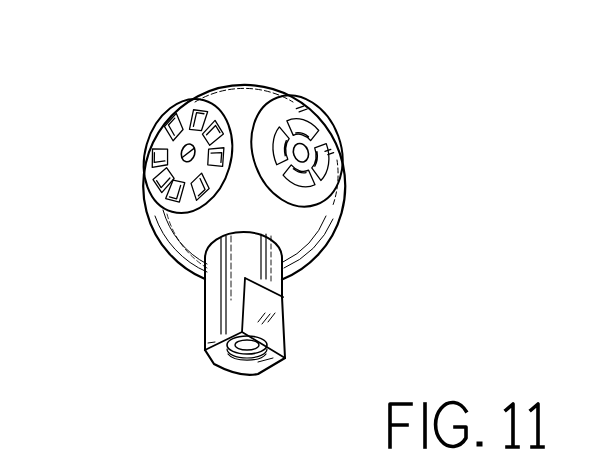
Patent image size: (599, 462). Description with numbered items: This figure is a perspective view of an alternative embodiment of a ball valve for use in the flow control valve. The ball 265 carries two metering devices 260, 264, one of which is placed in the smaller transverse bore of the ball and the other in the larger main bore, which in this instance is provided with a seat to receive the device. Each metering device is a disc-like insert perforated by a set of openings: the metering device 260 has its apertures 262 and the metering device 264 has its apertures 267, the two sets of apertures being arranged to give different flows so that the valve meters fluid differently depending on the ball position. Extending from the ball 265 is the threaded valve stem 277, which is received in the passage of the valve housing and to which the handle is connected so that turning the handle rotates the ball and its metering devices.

The metering device 260 is at (322, 143).
The apertures 262 is at (303, 123).
The metering device 264 is at (148, 133).
The ball 265 is at (253, 85).
The apertures 267 is at (197, 120).
The valve stem 277 is at (266, 272).